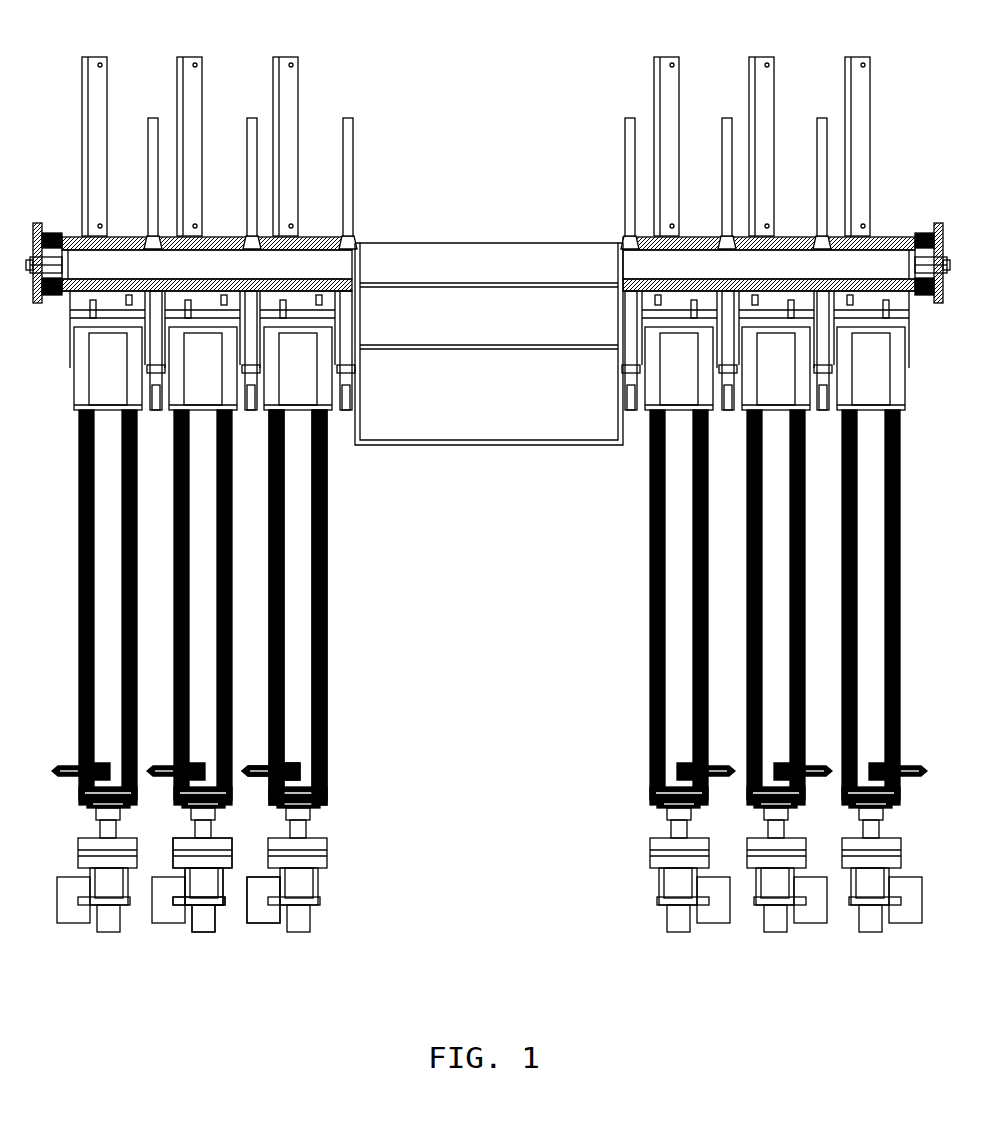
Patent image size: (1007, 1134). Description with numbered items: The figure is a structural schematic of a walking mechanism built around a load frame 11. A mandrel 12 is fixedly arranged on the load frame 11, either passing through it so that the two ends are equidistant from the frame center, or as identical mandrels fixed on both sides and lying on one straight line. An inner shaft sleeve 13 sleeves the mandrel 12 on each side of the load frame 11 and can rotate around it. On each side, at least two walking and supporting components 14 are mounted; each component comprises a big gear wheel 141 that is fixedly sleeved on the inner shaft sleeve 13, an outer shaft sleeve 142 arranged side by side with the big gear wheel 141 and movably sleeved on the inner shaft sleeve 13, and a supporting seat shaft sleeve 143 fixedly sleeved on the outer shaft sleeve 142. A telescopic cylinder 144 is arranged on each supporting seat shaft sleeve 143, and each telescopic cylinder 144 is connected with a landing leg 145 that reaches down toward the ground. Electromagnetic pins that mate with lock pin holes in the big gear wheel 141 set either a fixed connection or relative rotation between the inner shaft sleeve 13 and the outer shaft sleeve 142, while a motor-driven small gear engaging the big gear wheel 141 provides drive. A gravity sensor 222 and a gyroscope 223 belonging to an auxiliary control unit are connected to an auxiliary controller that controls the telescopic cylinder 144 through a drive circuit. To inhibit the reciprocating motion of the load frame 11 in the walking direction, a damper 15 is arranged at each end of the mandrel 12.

The load frame 11 is at (438, 407).
The mandrel 12 is at (428, 267).
The inner shaft sleeve 13 is at (207, 235).
The walking and supporting component 14 is at (297, 573).
The damper 15 is at (42, 227).
The big gear wheel 141 is at (348, 123).
The outer shaft sleeve 142 is at (303, 237).
The supporting seat shaft sleeve 143 is at (295, 93).
The telescopic cylinder 144 is at (303, 628).
The landing leg 145 is at (198, 910).
The gravity sensor 222 is at (258, 912).
The gyroscope 223 is at (262, 763).